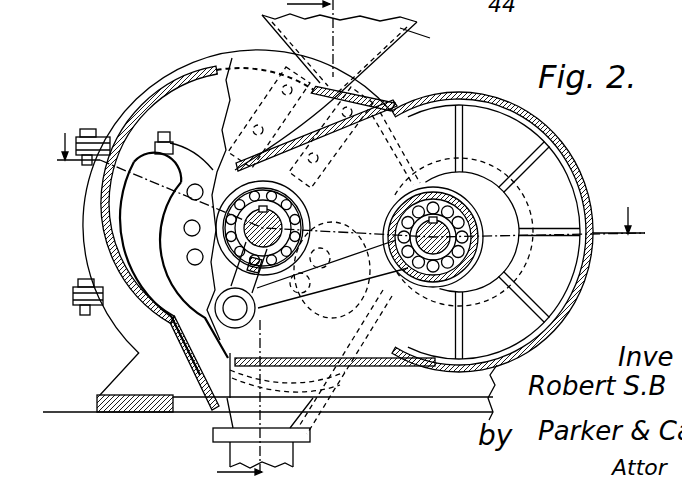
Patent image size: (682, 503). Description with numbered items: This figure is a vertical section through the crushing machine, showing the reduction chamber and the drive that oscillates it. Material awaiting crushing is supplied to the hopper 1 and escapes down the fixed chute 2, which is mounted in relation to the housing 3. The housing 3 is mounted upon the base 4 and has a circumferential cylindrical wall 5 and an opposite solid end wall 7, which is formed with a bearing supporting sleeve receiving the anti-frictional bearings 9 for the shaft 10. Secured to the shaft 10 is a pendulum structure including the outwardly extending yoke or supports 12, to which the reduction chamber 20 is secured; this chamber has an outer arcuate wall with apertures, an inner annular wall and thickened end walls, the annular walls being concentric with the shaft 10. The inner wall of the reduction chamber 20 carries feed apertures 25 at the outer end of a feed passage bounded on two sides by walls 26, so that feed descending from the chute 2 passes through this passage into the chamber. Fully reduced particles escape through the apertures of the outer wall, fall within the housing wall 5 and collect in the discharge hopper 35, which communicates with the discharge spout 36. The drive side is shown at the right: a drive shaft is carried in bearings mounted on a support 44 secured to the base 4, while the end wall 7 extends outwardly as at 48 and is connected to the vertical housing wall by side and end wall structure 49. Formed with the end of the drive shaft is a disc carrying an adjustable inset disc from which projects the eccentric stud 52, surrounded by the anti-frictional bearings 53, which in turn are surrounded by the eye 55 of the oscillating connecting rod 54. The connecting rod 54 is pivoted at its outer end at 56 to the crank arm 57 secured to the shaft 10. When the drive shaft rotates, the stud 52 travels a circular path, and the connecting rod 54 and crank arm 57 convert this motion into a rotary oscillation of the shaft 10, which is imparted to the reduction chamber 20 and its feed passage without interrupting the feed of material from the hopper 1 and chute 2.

The hopper 1 is at (345, 138).
The fixed chute 2 is at (277, 100).
The housing 3 is at (373, 90).
The base 4 is at (98, 397).
The circumferential cylindrical wall 5 is at (177, 90).
The solid end wall 7 is at (213, 80).
The anti-frictional bearings 9 is at (280, 203).
The shaft 10 is at (280, 213).
The yoke or supports 12 is at (183, 153).
The reduction chamber 20 is at (137, 222).
The feed apertures 25 is at (215, 305).
The walls 26 is at (228, 287).
The discharge hopper 35 is at (200, 399).
The discharge spout 36 is at (283, 453).
The support 44 is at (327, 99).
The outwardly extending wall portion 48 is at (428, 117).
The side and end wall structure 49 is at (593, 195).
The eccentric stud 52 is at (455, 225).
The anti-frictional bearings 53 is at (455, 250).
The connecting rod 54 is at (385, 305).
The eye 55 is at (463, 273).
The pivot 56 is at (177, 353).
The crank arm 57 is at (192, 253).